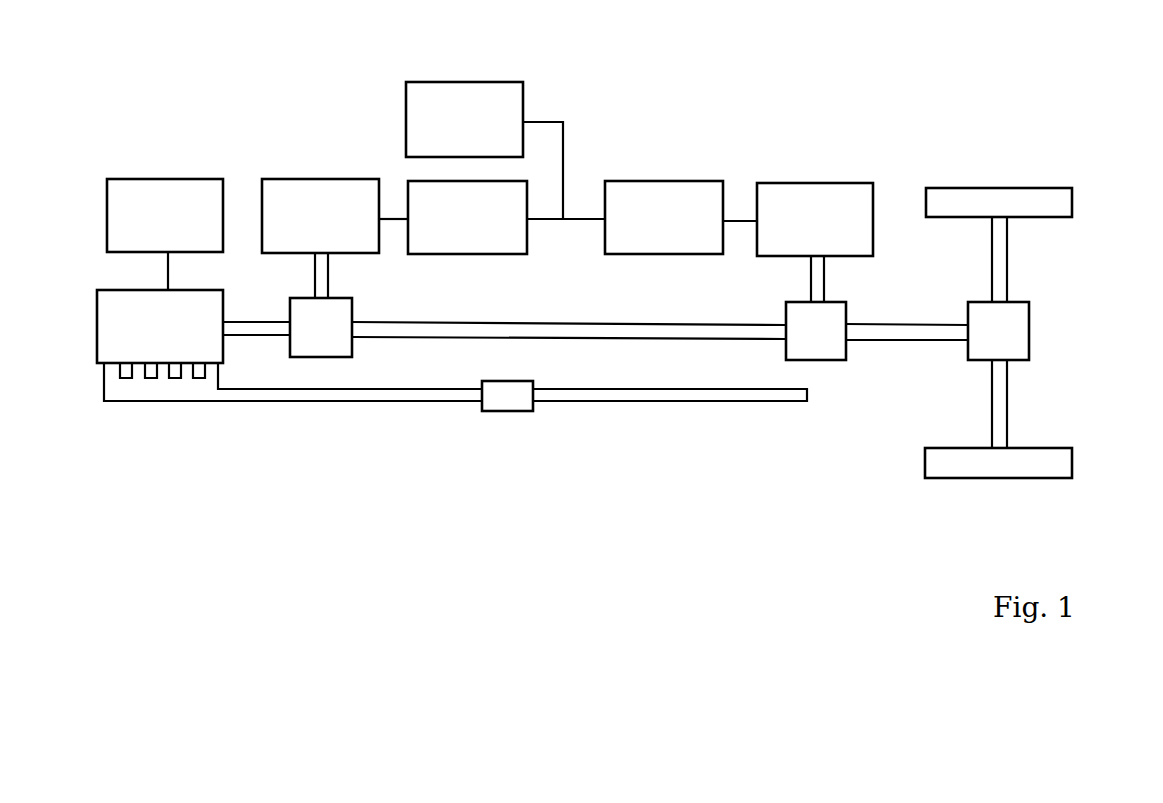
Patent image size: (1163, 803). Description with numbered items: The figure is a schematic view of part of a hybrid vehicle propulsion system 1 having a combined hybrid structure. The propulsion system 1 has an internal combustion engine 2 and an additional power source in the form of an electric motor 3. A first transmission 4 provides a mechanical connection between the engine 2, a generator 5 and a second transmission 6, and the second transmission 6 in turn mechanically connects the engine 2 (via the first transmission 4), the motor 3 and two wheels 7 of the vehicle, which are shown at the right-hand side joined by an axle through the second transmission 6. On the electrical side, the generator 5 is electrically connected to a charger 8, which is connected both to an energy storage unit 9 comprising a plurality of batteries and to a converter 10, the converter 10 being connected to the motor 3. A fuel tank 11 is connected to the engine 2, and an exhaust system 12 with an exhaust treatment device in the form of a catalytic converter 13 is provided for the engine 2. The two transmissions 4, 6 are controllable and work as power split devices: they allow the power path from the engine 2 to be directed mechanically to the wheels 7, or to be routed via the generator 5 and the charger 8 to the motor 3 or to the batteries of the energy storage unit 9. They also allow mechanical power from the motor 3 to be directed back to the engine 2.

The hybrid vehicle propulsion system 1 is at (668, 125).
The internal combustion engine 2 is at (151, 347).
The electric motor 3 is at (809, 237).
The first transmission 4 is at (312, 342).
The generator 5 is at (311, 228).
The second transmission 6 is at (807, 345).
The wheels 7 is at (1050, 218).
The charger 8 is at (458, 235).
The energy storage unit 9 is at (453, 137).
The converter 10 is at (680, 235).
The fuel tank 11 is at (181, 228).
The exhaust system 12 is at (327, 401).
The catalytic converter 13 is at (512, 411).